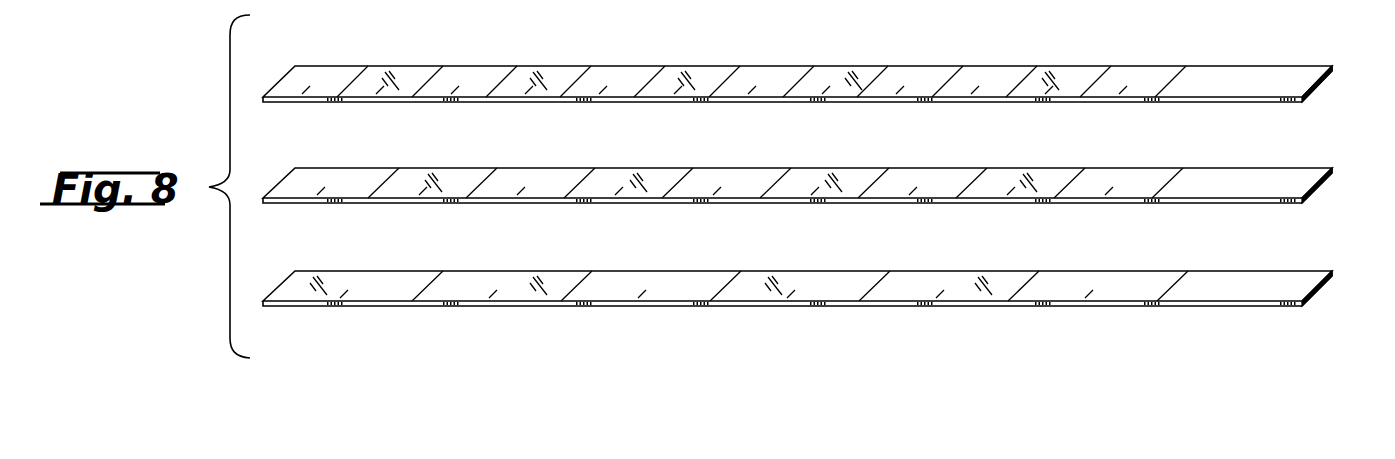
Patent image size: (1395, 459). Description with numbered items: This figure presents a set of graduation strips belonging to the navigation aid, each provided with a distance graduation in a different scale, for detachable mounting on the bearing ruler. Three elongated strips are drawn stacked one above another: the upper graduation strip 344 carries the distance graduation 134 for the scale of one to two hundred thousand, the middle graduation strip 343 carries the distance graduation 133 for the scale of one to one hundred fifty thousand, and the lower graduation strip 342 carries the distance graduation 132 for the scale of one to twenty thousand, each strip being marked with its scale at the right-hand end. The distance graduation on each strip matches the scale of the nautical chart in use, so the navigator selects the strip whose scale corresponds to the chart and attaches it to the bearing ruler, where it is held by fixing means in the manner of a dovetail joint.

The distance graduation 134 is at (348, 90).
The distance graduation 133 is at (377, 190).
The distance graduation 132 is at (347, 293).
The graduation strip 344 is at (1307, 80).
The graduation strip 343 is at (1307, 182).
The graduation strip 342 is at (1307, 285).